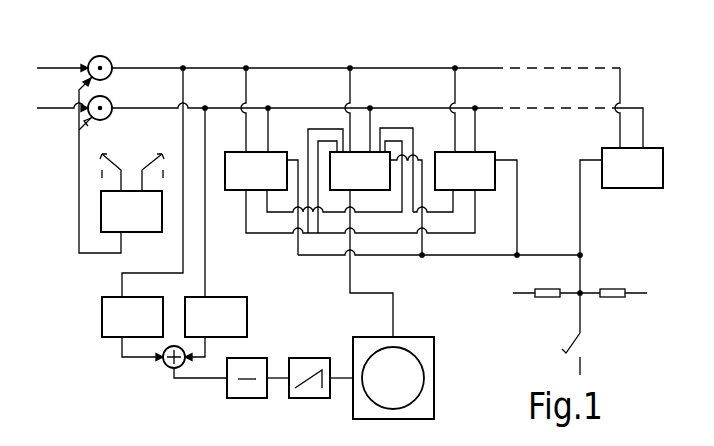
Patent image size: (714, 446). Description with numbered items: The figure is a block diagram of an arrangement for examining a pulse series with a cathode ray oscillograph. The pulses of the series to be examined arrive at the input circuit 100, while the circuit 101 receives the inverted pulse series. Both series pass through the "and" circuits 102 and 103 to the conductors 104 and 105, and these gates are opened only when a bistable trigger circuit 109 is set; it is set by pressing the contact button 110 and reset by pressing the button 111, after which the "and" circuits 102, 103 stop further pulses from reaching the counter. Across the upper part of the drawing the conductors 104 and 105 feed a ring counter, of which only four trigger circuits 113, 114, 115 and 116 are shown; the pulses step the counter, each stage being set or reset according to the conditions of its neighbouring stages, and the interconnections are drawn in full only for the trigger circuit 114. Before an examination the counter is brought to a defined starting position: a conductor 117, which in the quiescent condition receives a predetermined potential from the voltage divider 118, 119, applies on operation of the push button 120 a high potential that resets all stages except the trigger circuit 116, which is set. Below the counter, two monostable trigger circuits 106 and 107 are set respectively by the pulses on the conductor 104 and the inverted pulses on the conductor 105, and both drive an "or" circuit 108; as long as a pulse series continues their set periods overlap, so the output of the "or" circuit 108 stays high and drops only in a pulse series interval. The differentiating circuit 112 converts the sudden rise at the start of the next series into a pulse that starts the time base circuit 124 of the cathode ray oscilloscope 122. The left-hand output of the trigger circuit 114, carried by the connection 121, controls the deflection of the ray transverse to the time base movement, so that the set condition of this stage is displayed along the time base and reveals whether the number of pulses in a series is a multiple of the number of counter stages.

The input circuit 100 is at (62, 58).
The circuit 101 is at (62, 98).
The "and" circuit 102 is at (109, 61).
The "and" circuit 103 is at (109, 101).
The conductor 104 is at (366, 59).
The conductor 105 is at (362, 97).
The monostable trigger circuit 106 is at (132, 317).
The monostable trigger circuit 107 is at (216, 317).
The "or" circuit 108 is at (159, 367).
The bistable trigger circuit 109 is at (131, 211).
The contact button 110 is at (114, 162).
The button 111 is at (150, 162).
The differentiating circuit 112 is at (247, 391).
The trigger circuit 113 is at (261, 203).
The trigger circuit 114 is at (360, 171).
The trigger circuit 115 is at (465, 171).
The trigger circuit 116 is at (632, 168).
The conductor 117 is at (439, 243).
The voltage divider 118 is at (545, 283).
The voltage divider 119 is at (611, 283).
The push button 120 is at (590, 354).
The output line 121 is at (371, 263).
The cathode ray oscilloscope 122 is at (410, 378).
The time base circuit 124 is at (309, 391).